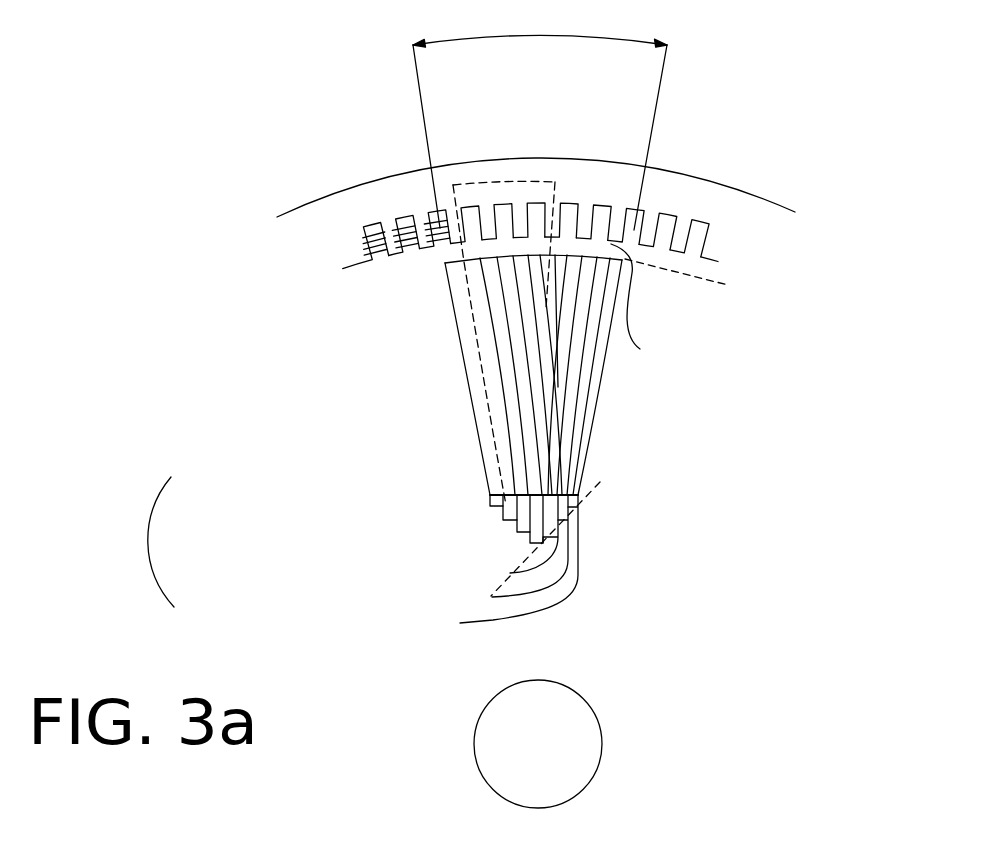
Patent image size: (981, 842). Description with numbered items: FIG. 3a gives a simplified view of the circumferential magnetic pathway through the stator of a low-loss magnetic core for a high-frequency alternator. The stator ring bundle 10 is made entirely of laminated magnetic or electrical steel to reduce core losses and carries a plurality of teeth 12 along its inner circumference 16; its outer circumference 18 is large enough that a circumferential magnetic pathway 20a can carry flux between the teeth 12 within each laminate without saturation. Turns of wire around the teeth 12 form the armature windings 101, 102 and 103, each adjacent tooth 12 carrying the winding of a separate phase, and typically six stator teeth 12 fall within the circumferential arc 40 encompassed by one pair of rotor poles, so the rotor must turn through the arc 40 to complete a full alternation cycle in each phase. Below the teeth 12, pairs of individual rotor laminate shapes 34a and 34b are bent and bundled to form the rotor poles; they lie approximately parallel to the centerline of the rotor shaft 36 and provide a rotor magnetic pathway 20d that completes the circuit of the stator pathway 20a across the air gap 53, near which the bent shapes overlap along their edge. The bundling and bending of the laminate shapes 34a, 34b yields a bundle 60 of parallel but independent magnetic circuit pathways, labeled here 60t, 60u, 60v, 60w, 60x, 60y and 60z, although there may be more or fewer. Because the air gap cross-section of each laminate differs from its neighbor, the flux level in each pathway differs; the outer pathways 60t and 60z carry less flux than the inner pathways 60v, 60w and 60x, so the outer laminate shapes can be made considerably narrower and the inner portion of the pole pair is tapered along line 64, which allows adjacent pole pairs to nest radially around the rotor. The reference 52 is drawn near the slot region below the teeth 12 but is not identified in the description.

The stator ring bundle 10 is at (388, 172).
The outer circumference 18 is at (802, 213).
The inner circumference 16 is at (720, 267).
The stator teeth 12 is at (673, 251).
The slot bottom line 52 is at (731, 286).
The air gap 53 is at (640, 349).
The circumferential magnetic pathway 20a is at (477, 183).
The rotor magnetic pathway 20d is at (490, 387).
The circumferential arc 40 is at (542, 35).
The rotor laminate shape 34a is at (570, 481).
The rotor laminate shape 34b is at (580, 451).
The taper line 64 is at (588, 497).
The bundle of magnetic circuit pathways 60 is at (150, 538).
The rotor shaft 36 is at (582, 695).
The armature winding 101 is at (377, 263).
The armature winding 102 is at (410, 252).
The armature winding 103 is at (440, 248).
The magnetic pathway 60t is at (490, 505).
The magnetic pathway 60u is at (503, 518).
The magnetic pathway 60v is at (517, 530).
The magnetic pathway 60w is at (530, 543).
The magnetic pathway 60x is at (510, 573).
The magnetic pathway 60y is at (492, 597).
The magnetic pathway 60z is at (460, 623).